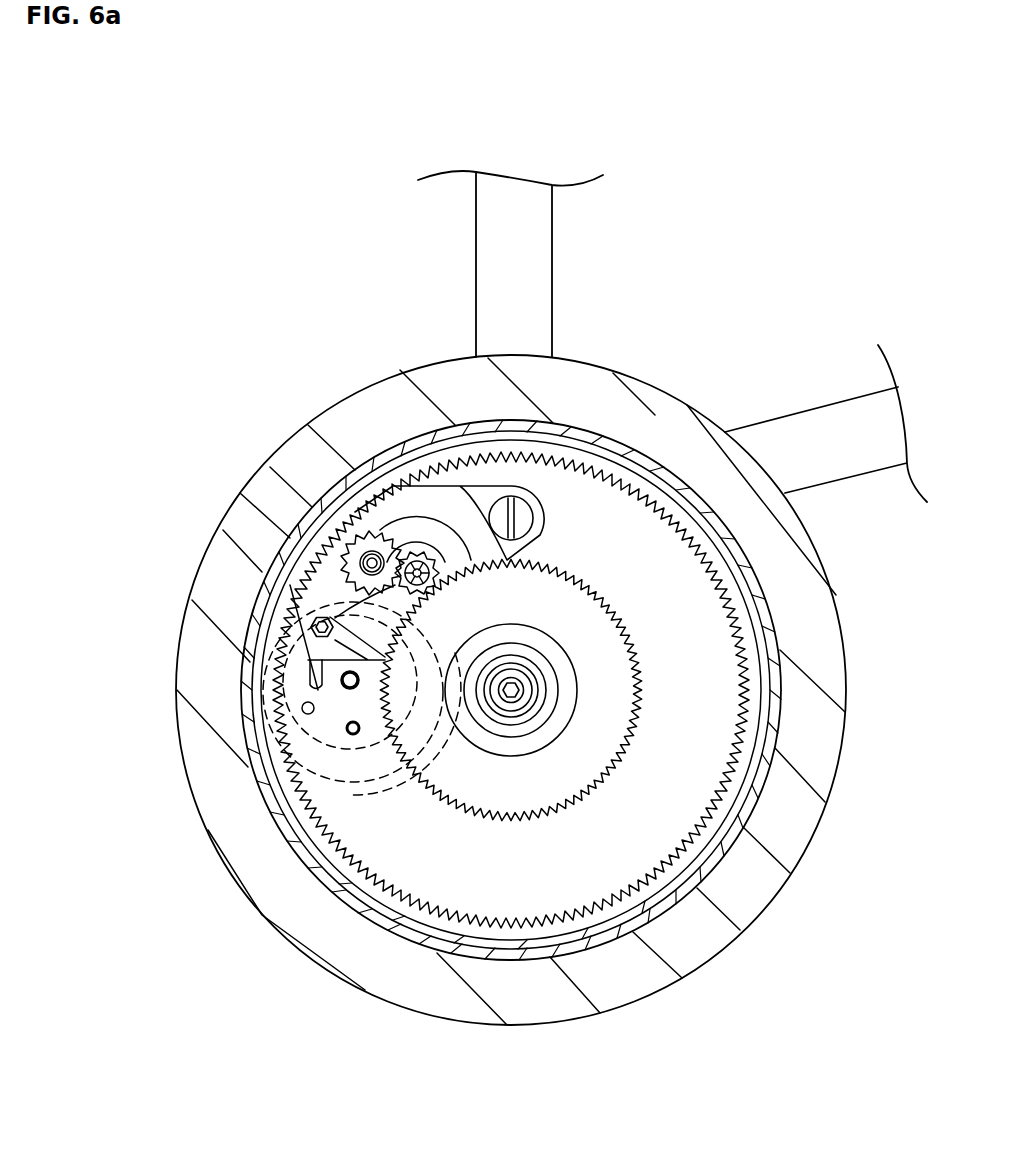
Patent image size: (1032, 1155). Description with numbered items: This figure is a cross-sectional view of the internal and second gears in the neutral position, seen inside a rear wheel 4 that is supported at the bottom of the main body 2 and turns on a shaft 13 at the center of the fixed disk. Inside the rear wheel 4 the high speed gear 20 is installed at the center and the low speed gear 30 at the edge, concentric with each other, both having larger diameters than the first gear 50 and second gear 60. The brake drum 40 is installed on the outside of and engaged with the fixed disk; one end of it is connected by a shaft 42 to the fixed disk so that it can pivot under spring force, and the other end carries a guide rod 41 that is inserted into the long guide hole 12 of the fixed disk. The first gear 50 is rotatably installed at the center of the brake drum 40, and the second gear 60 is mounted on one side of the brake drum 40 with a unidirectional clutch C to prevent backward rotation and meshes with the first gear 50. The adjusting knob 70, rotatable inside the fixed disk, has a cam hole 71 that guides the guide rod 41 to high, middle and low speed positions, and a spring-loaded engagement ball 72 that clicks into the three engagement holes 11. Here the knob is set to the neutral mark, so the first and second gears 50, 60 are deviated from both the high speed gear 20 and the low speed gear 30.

The main body 2 is at (468, 267).
The rear wheel 4 is at (582, 388).
The engagement holes 11 is at (302, 708).
The long guide hole 12 is at (310, 623).
The shaft 13 is at (513, 690).
The high speed gear 20 is at (512, 790).
The low speed gear 30 is at (653, 877).
The brake drum 40 is at (416, 503).
The guide rod 41 is at (312, 628).
The shaft 42 is at (527, 513).
The 1st gear 50 is at (372, 528).
The 2nd gear 60 is at (356, 560).
The adjusting knob 70 is at (363, 795).
The cam hole 71 is at (310, 672).
The engagement ball 72 is at (355, 777).
The unidirectional clutch C is at (340, 560).